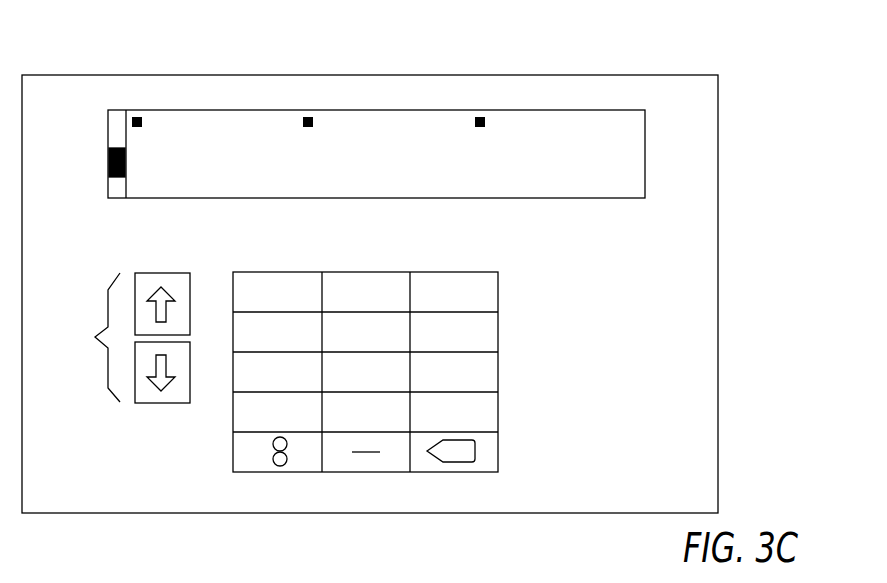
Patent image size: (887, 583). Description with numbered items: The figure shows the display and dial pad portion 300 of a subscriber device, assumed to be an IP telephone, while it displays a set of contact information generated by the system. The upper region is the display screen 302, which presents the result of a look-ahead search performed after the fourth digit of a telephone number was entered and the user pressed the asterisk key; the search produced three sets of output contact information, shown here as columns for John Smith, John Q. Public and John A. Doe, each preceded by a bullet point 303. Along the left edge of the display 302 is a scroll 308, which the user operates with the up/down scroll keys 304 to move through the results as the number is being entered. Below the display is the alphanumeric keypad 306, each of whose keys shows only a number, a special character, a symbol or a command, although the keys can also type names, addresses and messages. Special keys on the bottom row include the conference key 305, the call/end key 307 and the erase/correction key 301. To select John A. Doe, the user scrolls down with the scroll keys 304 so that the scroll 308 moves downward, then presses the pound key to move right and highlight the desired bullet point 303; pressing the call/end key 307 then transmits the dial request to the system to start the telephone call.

The display and dial pad portion 300 is at (606, 74).
The erase/correction key 301 is at (499, 450).
The display screen 302 is at (647, 143).
The bullet point 303 is at (478, 118).
The up/down scroll keys 304 is at (95, 336).
The conference key 305 is at (232, 457).
The alphanumeric keypad 306 is at (499, 287).
The call/end key 307 is at (328, 467).
The scroll 308 is at (106, 165).